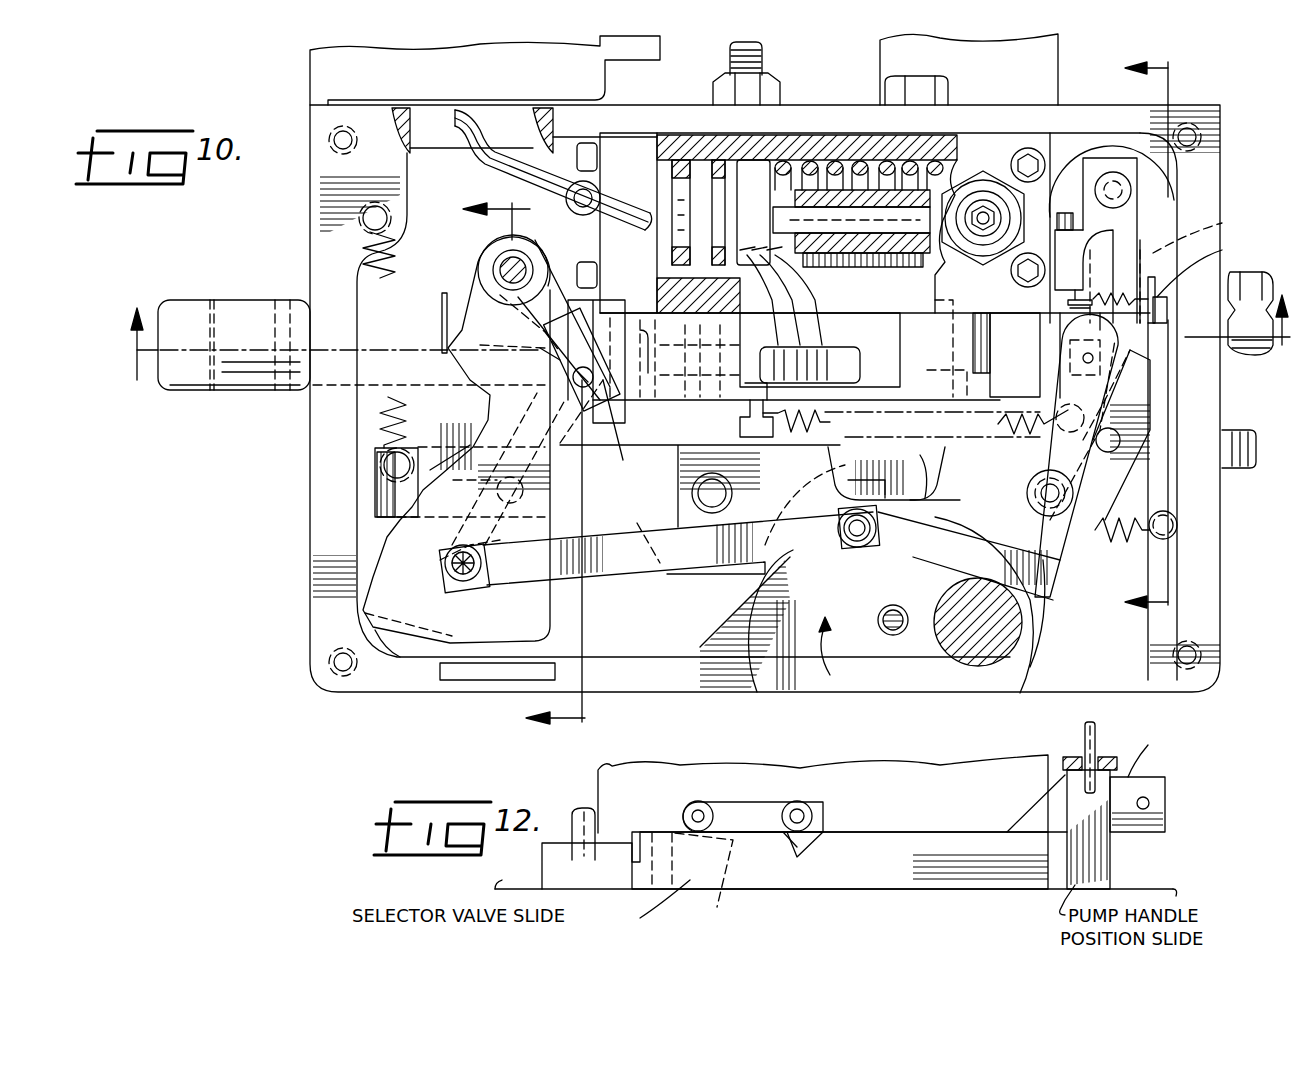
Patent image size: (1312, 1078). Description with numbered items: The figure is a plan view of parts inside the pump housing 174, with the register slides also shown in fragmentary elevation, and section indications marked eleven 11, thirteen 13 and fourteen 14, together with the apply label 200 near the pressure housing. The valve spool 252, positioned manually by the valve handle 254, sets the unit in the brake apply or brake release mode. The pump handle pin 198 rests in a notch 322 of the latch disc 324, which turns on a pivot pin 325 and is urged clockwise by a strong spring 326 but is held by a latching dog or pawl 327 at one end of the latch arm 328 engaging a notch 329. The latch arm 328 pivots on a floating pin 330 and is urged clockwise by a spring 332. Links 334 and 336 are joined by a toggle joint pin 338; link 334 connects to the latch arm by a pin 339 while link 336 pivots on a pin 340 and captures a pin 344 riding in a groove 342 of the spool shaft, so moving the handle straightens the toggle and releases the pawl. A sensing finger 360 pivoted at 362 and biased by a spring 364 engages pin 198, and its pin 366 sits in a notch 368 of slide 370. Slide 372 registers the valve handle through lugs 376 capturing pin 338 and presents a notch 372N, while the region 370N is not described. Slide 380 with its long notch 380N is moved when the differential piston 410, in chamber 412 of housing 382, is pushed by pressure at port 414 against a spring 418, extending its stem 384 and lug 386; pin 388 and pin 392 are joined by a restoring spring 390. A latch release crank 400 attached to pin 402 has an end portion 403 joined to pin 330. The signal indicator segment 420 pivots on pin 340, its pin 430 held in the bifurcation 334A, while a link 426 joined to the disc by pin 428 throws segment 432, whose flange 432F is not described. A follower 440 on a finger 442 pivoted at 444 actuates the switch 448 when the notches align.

In FIG. 10, the section line 11- 11 is at (708, 346).
In FIG. 10, the section line 13- 13 is at (546, 462).
In FIG. 10, the section line 14- 14 is at (1169, 336).
In FIG. 10, the pump housing 174 is at (372, 690).
In FIG. 10, the pump handle pin 198 is at (1030, 630).
In FIG. 10, the apply lever 200 is at (896, 80).
In FIG. 10, the valve spool 252 is at (442, 355).
In FIG. 10, the valve handle 254 is at (195, 390).
In FIG. 10, the notch 322 is at (975, 660).
In FIG. 10, the latch disc 324 is at (830, 690).
In FIG. 10, the pivot pin 325 is at (900, 635).
In FIG. 10, the spring 326 is at (1120, 542).
In FIG. 10, the latching dog or pawl 327 is at (932, 470).
In FIG. 10, the latch arm 328 is at (375, 482).
In FIG. 10, the notch 329 is at (886, 473).
In FIG. 10, the pin 330 is at (726, 493).
In FIG. 10, the spring 332 is at (398, 258).
In FIG. 10, the link 334 is at (556, 471).
In FIG. 10, the bifurcation 334A is at (438, 567).
In FIG. 10, the link 336 is at (646, 463).
In FIG. 10, the toggle joint pin 338 is at (592, 359).
In FIG. 12, the toggle joint pin 338 is at (578, 806).
In FIG. 10, the pin 339 is at (468, 486).
In FIG. 10, the pin 340 is at (530, 256).
In FIG. 10, the groove 342 is at (517, 323).
In FIG. 10, the pin 344 is at (540, 352).
In FIG. 10, the sensing finger 360 is at (1050, 585).
In FIG. 12, the sensing finger 360 is at (1070, 757).
In FIG. 10, the pivot 362 is at (1075, 493).
In FIG. 10, the spring 364 is at (816, 423).
In FIG. 10, the pin 366 is at (1092, 358).
In FIG. 12, the pin 366 is at (1086, 722).
In FIG. 10, the notch 368 is at (1105, 352).
In FIG. 12, the notch 368 is at (1085, 790).
In FIG. 10, the slide 370 is at (1031, 410).
In FIG. 12, the slide 370 is at (1110, 860).
In FIG. 12, the notch 370N is at (805, 832).
In FIG. 10, the slide 372 is at (620, 342).
In FIG. 12, the slide 372 is at (985, 875).
In FIG. 12, the notch 372N is at (800, 857).
In FIG. 10, the lugs or ears 376 is at (614, 413).
In FIG. 12, the lugs or ears 376 is at (542, 850).
In FIG. 10, the register slide 380 is at (890, 330).
In FIG. 12, the register slide 380 is at (1128, 777).
In FIG. 12, the long notch 380N is at (717, 875).
In FIG. 10, the housing 382 is at (1022, 140).
In FIG. 12, the housing 382 is at (945, 760).
In FIG. 10, the stem 384 is at (918, 200).
In FIG. 10, the lug 386 is at (1209, 234).
In FIG. 10, the pin 388 is at (1211, 269).
In FIG. 12, the pin 388 is at (1148, 807).
In FIG. 10, the restoring spring 390 is at (1156, 296).
In FIG. 10, the pin 392 is at (1068, 292).
In FIG. 10, the latch release crank 400 is at (1111, 435).
In FIG. 10, the pin 402 is at (1125, 190).
In FIG. 10, the end portion 403 is at (678, 494).
In FIG. 10, the differential piston 410 is at (752, 170).
In FIG. 10, the chamber 412 is at (945, 168).
In FIG. 10, the port 414 is at (720, 165).
In FIG. 10, the spring 418 is at (860, 165).
In FIG. 10, the signal indicator segment 420 is at (710, 165).
In FIG. 10, the link 426 is at (612, 570).
In FIG. 10, the pin 428 is at (858, 548).
In FIG. 10, the pin 430 is at (470, 580).
In FIG. 10, the segment 432 is at (552, 628).
In FIG. 10, the lever flange 432F is at (418, 660).
In FIG. 12, the follower 440 is at (805, 805).
In FIG. 10, the finger 442 is at (660, 300).
In FIG. 12, the finger 442 is at (780, 802).
In FIG. 10, the pivot 444 is at (729, 410).
In FIG. 12, the pivot 444 is at (700, 802).
In FIG. 10, the switch 448 is at (850, 345).